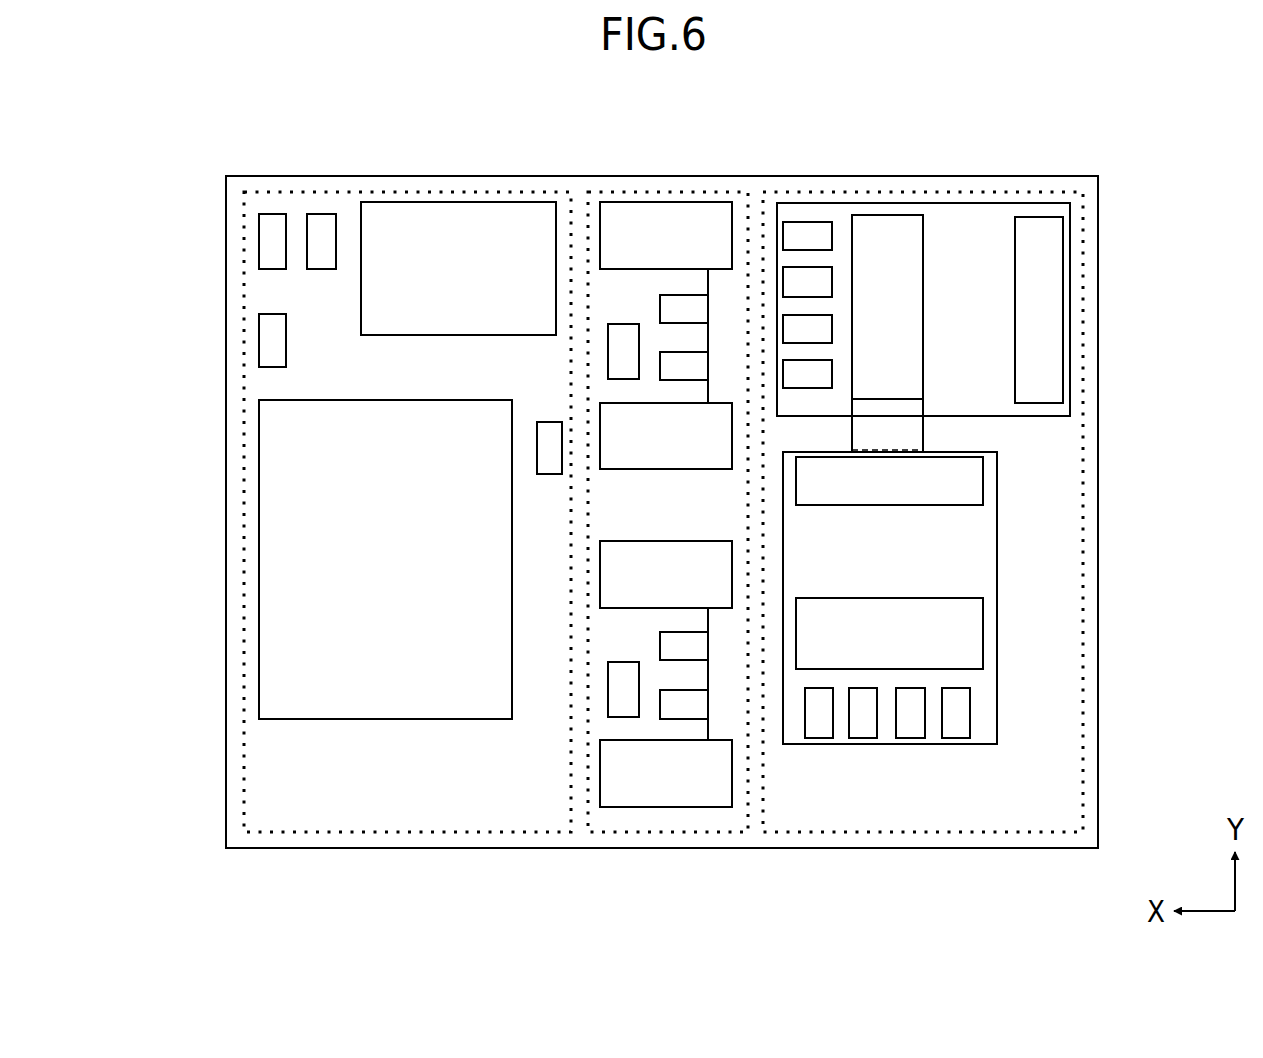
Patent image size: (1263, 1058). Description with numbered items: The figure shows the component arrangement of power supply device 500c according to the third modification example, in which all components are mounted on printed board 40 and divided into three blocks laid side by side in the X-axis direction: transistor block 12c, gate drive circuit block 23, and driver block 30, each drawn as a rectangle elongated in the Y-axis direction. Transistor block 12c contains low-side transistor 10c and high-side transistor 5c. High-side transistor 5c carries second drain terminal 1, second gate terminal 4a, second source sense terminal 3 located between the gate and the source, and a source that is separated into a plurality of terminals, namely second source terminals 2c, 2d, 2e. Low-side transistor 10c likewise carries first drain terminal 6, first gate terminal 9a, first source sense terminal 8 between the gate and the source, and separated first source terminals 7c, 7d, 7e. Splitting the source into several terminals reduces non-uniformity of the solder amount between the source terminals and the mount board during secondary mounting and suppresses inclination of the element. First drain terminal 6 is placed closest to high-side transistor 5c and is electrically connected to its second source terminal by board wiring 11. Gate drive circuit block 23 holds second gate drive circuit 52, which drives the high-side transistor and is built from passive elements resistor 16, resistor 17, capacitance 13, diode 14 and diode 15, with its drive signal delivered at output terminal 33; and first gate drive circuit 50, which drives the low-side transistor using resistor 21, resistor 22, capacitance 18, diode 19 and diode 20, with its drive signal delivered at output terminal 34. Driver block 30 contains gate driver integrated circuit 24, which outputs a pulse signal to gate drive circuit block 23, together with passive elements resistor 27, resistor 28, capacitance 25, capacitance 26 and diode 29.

The power supply device 500c is at (162, 178).
The printed board 40 is at (1099, 787).
The driver block 30 is at (400, 833).
The resistor 27 is at (275, 240).
The resistor 28 is at (320, 240).
The diode 29 is at (452, 232).
The capacitance 25 is at (275, 340).
The capacitance 26 is at (548, 447).
The gate driver integrated circuit 24 is at (290, 557).
The first gate drive circuit 50 is at (595, 824).
The second gate drive circuit 52 is at (595, 194).
The diode 15 is at (646, 228).
The capacitance 13 is at (622, 345).
The resistor 16 is at (676, 367).
The resistor 17 is at (693, 310).
The output terminal 33 is at (737, 222).
The diode 14 is at (641, 447).
The diode 20 is at (690, 560).
The resistor 22 is at (676, 650).
The resistor 21 is at (699, 704).
The capacitance 18 is at (620, 695).
The diode 19 is at (644, 790).
The gate drive circuit block 23 is at (683, 833).
The output terminal 34 is at (737, 790).
The transistor block 12c is at (1022, 835).
The high-side transistor 5c is at (942, 203).
The second source terminal 2d is at (802, 237).
The second source terminal 2e is at (810, 282).
The second source sense terminal 3 is at (815, 330).
The second gate terminal 4a is at (802, 378).
The second source terminal 2c is at (885, 242).
The board wiring 11 is at (905, 430).
The second drain terminal 1 is at (1043, 312).
The low-side transistor 10c is at (997, 697).
The first drain terminal 6 is at (958, 480).
The first source terminal 7c is at (958, 633).
The first gate terminal 9a is at (820, 718).
The first source sense terminal 8 is at (863, 718).
The first source terminal 7e is at (912, 718).
The first source terminal 7d is at (957, 718).